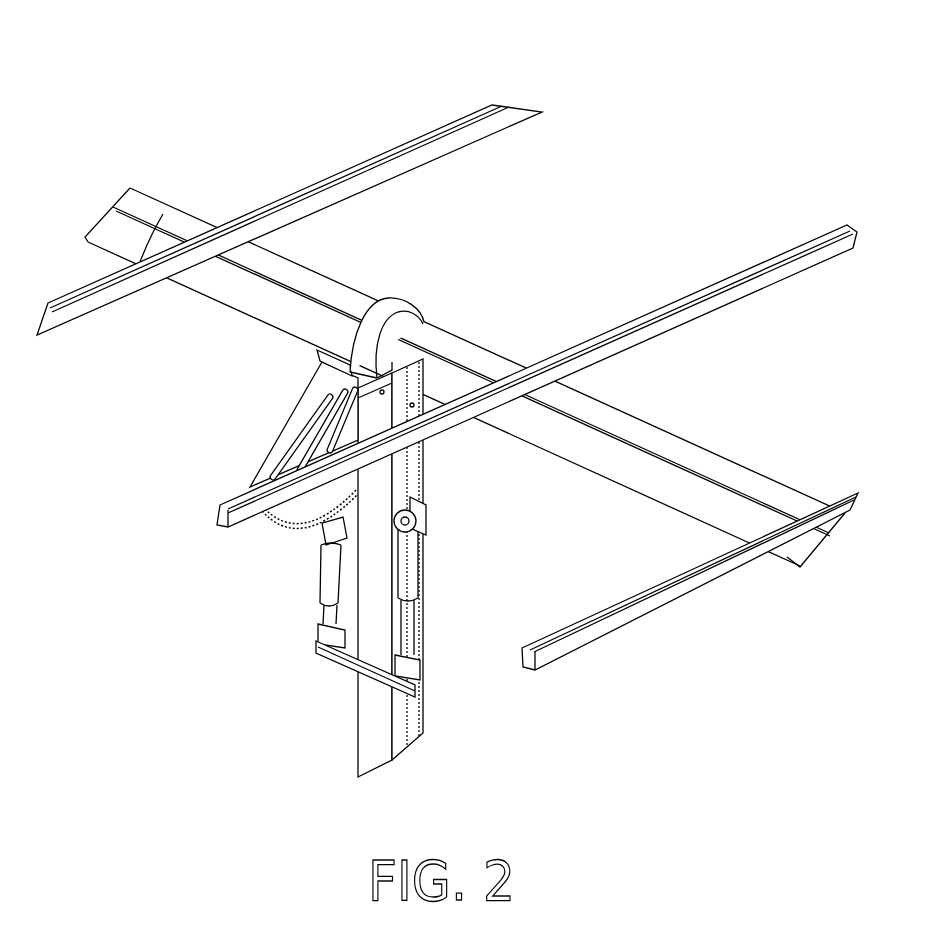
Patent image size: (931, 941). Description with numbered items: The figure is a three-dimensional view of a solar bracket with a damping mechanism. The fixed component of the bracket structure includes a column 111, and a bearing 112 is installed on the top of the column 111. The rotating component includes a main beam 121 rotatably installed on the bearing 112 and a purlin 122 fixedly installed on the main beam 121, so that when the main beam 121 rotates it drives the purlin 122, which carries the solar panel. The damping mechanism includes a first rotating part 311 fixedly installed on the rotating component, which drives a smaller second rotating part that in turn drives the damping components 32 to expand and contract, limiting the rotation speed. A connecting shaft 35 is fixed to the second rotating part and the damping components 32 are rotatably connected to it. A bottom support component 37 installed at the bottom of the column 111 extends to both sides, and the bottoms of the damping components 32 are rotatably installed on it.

The column 111 is at (367, 710).
The bearing 112 is at (387, 320).
The main beam 121 is at (267, 297).
The purlin 122 is at (417, 162).
The first rotating part 311 is at (290, 440).
The damping component 32 is at (334, 571).
The connecting shaft 35 is at (428, 517).
The bottom support component 37 is at (340, 663).